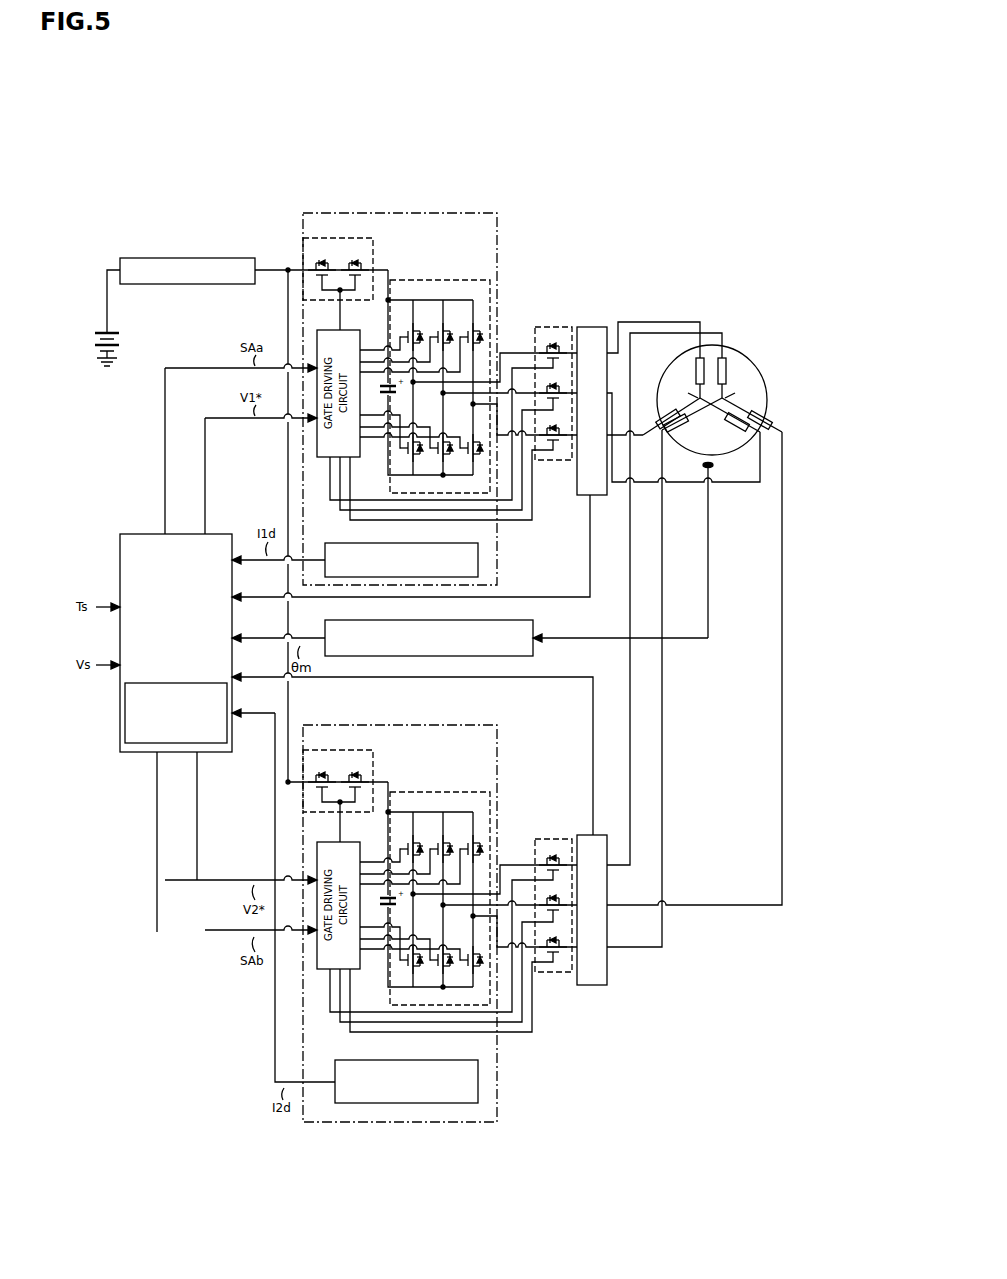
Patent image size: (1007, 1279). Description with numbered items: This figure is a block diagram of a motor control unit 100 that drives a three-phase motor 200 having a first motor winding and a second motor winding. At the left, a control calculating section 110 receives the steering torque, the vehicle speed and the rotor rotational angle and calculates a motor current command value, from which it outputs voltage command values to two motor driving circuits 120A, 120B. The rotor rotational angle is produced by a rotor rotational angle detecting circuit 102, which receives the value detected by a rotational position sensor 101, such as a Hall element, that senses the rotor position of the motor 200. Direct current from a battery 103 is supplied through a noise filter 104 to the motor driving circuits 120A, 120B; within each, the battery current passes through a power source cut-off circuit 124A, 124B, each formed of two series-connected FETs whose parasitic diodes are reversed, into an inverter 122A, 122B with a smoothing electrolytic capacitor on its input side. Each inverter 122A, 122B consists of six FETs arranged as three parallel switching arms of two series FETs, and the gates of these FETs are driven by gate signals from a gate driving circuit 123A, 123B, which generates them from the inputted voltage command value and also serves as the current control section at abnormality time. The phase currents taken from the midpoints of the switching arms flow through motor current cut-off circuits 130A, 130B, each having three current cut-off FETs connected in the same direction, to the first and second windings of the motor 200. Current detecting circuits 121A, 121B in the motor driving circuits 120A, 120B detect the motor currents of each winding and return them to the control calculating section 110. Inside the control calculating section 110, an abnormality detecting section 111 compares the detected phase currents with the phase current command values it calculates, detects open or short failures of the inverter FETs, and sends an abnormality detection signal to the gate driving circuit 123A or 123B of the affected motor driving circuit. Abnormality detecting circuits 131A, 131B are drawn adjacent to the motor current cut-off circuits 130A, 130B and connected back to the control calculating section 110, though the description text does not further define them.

The motor control unit 100 is at (548, 243).
The rotational position sensor 101 is at (713, 465).
The rotor rotational angle detecting circuit 102 is at (533, 620).
The battery 103 is at (109, 334).
The noise filter 104 is at (243, 251).
The control calculating section 110 is at (177, 631).
The abnormality detecting section 111 is at (210, 676).
The motor driving circuit 120A is at (368, 385).
The motor driving circuit 120B is at (368, 910).
The current detecting circuit 121A is at (478, 537).
The current detecting circuit 121B is at (476, 1054).
The inverter 122A is at (480, 274).
The inverter 122B is at (480, 786).
The gate driving circuit 123A is at (368, 379).
The gate driving circuit 123B is at (368, 891).
The power source cut-off circuit 124A is at (368, 370).
The power source cut-off circuit 124B is at (368, 882).
The motor current cut-off circuit 130A is at (562, 319).
The motor current cut-off circuit 130B is at (562, 831).
The first abnormality detecting circuit 131A is at (602, 319).
The second abnormality detecting circuit 131B is at (602, 831).
The 3-phase motor 200 is at (735, 357).